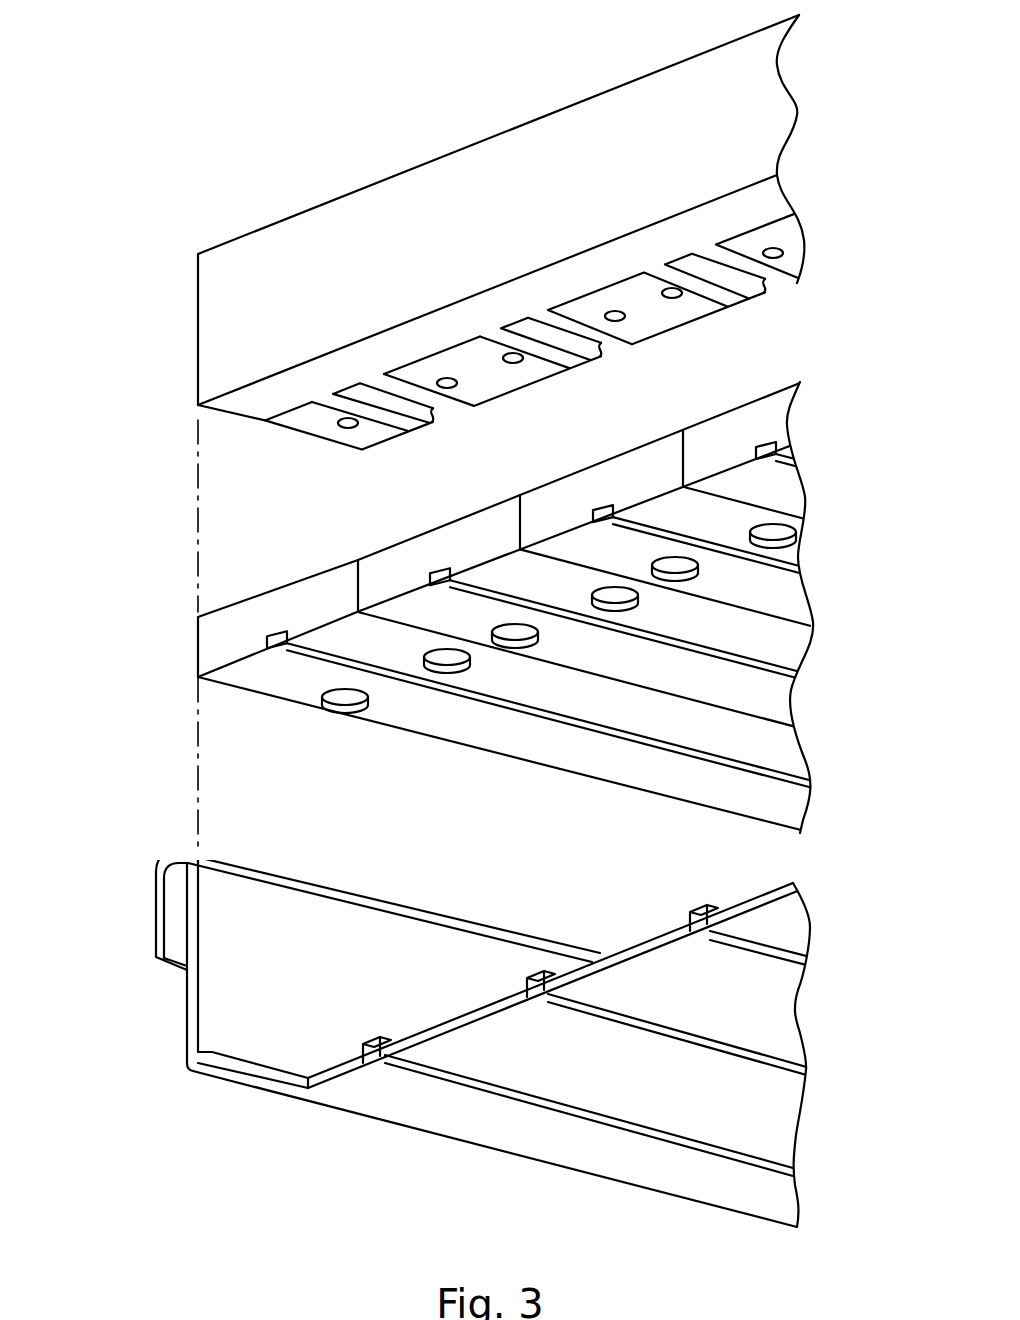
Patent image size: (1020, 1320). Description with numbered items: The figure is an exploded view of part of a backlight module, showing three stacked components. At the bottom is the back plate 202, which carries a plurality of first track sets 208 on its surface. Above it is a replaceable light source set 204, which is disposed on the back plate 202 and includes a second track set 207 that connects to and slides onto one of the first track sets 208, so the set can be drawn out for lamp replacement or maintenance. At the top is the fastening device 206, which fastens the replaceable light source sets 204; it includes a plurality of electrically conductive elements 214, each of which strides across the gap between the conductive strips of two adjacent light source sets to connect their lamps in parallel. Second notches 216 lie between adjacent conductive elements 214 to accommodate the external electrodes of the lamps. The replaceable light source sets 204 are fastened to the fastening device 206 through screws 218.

The back plate 202 is at (178, 1006).
The replaceable light source set 204 is at (213, 658).
The fastening device 206 is at (218, 331).
The second track set 207 is at (278, 642).
The first track set 208 is at (372, 1064).
The electrically conductive element 214 is at (473, 362).
The second notch 216 is at (445, 418).
The screw 218 is at (347, 704).